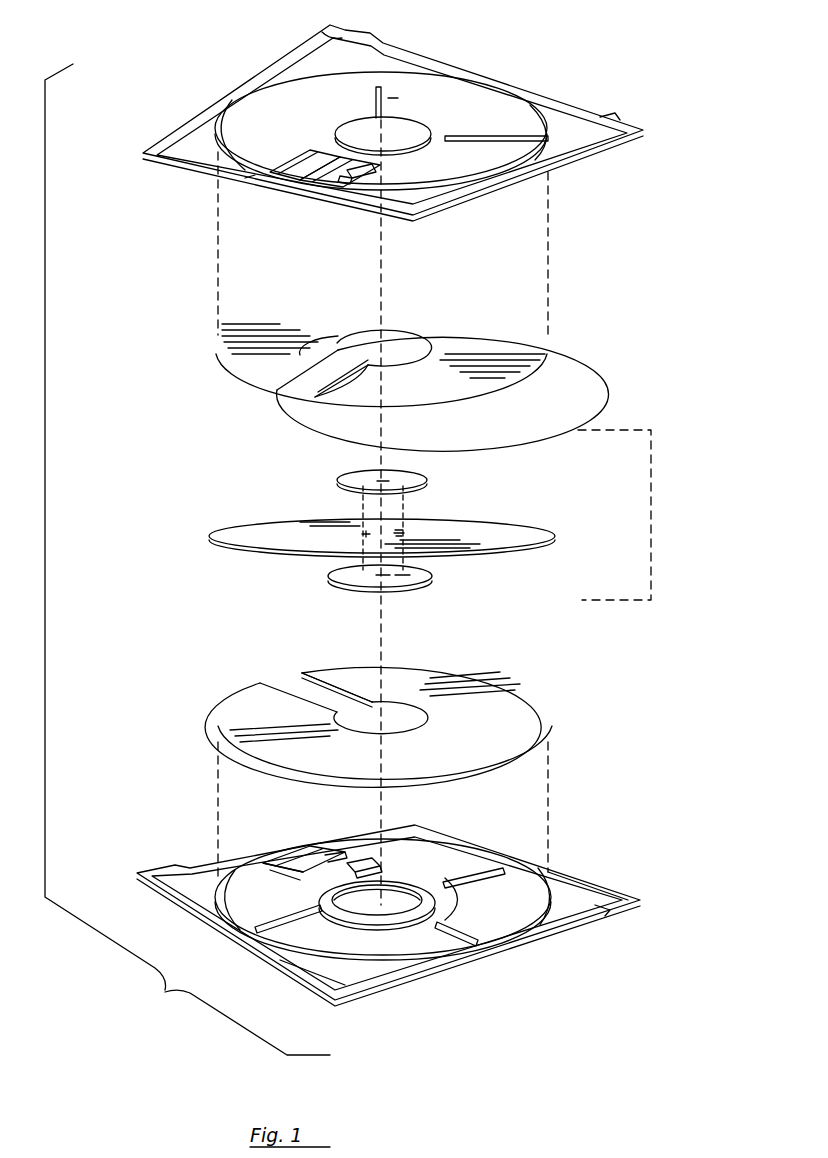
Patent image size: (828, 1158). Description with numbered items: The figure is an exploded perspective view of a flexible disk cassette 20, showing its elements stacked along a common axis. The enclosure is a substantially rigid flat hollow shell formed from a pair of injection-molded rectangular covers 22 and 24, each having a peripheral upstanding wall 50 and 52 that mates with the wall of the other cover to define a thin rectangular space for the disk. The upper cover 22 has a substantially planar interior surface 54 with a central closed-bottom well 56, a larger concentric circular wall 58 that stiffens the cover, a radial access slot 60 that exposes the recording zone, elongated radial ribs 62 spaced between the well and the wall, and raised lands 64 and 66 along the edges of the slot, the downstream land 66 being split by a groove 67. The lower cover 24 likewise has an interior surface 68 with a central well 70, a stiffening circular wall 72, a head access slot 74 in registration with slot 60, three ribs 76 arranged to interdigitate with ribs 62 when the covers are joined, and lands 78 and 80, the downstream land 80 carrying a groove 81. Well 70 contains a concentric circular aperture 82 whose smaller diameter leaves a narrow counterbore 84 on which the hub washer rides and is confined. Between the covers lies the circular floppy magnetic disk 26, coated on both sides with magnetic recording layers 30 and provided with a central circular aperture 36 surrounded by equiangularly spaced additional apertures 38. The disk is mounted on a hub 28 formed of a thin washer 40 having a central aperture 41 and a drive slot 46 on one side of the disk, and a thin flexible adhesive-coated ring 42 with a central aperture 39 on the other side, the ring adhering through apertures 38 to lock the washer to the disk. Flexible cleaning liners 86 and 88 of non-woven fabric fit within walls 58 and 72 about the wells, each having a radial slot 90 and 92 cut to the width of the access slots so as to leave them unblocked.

The disk cassette 20 is at (165, 990).
The cover 22 is at (393, 130).
The cover 24 is at (393, 898).
The magnetic disk 26 is at (400, 519).
The hub 28 is at (652, 508).
The magnetic recording layer 30 is at (490, 527).
The circular aperture 36 is at (365, 527).
The additional apertures 38 is at (402, 528).
The central aperture 39 is at (380, 478).
The washer 40 is at (400, 588).
The central circular aperture 41 is at (355, 560).
The ring 42 is at (400, 475).
The drive slot 46 is at (415, 566).
The peripheral upstanding wall 50 is at (330, 38).
The peripheral upstanding wall 52 is at (560, 890).
The interior surface 54 is at (280, 118).
The well 56 is at (425, 142).
The circular wall 58 is at (383, 95).
The access slot 60 is at (322, 172).
The ribs 62 is at (392, 98).
The raised land 64 is at (297, 176).
The raised land 66 is at (358, 176).
The groove 67 is at (345, 183).
The interior surface 68 is at (325, 965).
The well 70 is at (385, 912).
The circular wall 72 is at (370, 960).
The head access slot 74 is at (300, 858).
The ribs 76 is at (285, 915).
The raised land 78 is at (285, 867).
The raised land 80 is at (368, 870).
The groove 81 is at (340, 860).
The circular aperture 82 is at (360, 905).
The counterbore 84 is at (390, 893).
The cleaning liner 86 is at (412, 387).
The cleaning liner 88 is at (378, 715).
The radial slot 90 is at (310, 383).
The radial slot 92 is at (293, 685).